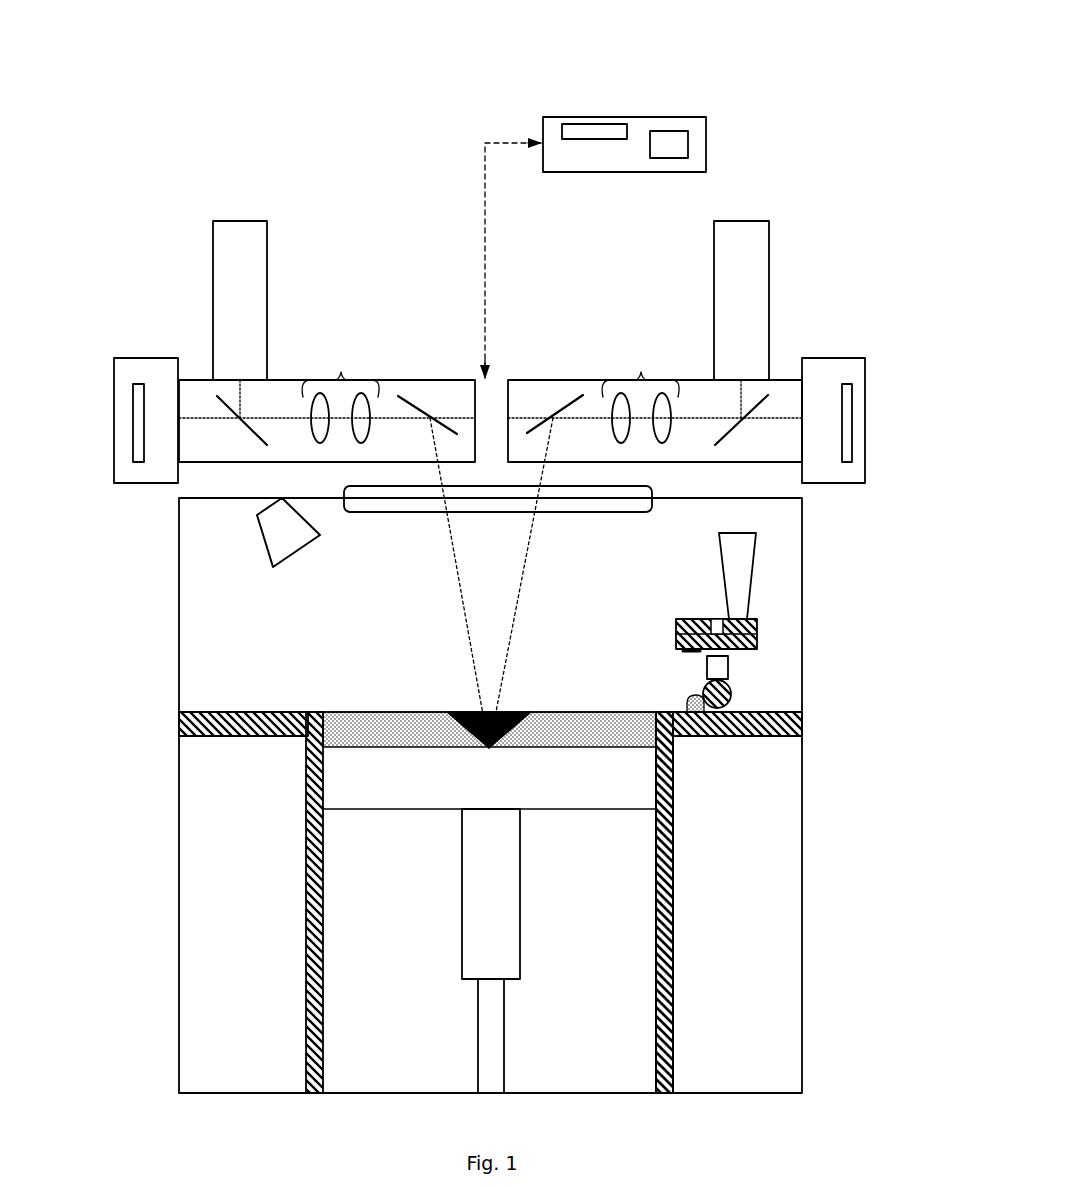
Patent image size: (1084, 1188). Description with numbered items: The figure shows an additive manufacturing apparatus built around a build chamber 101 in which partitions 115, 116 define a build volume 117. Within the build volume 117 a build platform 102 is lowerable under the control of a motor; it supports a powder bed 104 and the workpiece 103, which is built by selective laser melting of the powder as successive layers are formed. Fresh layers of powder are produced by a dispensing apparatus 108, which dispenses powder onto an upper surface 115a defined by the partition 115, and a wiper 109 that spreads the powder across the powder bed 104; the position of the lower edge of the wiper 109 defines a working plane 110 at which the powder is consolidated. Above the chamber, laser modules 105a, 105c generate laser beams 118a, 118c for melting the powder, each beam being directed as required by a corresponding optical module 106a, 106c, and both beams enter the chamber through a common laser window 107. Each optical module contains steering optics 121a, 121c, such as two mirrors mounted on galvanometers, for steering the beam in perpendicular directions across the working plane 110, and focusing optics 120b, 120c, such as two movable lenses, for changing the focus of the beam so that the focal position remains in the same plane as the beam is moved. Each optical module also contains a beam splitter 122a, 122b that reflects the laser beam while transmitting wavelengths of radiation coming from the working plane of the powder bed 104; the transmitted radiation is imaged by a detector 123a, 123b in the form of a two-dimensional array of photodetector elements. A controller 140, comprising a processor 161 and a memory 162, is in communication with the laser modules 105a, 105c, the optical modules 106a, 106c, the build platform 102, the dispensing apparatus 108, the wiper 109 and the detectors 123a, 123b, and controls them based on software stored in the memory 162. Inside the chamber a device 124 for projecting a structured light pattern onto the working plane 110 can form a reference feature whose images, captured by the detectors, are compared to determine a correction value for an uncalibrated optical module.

The build chamber 101 is at (165, 553).
The build platform 102 is at (572, 780).
The workpiece 103 is at (489, 752).
The powder bed 104 is at (368, 737).
The laser module 105a is at (239, 250).
The laser module 105c is at (742, 250).
The optical module 106a is at (177, 345).
The optical module 106c is at (789, 357).
The common laser window 107 is at (522, 505).
The dispensing apparatus 108 is at (743, 603).
The wiper 109 is at (730, 698).
The working plane 110 is at (380, 712).
The partition 115 is at (235, 710).
The upper surface 115a is at (765, 710).
The partition 116 is at (668, 868).
The build volume 117 is at (652, 727).
The laser beam 118a is at (455, 590).
The laser beam 118c is at (532, 605).
The focusing optics 120b is at (339, 382).
The focusing optics 120c is at (640, 381).
The steering optics 121a is at (428, 412).
The steering optics 121c is at (552, 410).
The beam splitter 122a is at (217, 396).
The beam splitter 122b is at (735, 430).
The detector 123a is at (133, 383).
The detector 123b is at (853, 392).
The device for projecting a structured light pattern 124 is at (272, 547).
The controller 140 is at (603, 87).
The processor 161 is at (672, 137).
The memory 162 is at (573, 128).